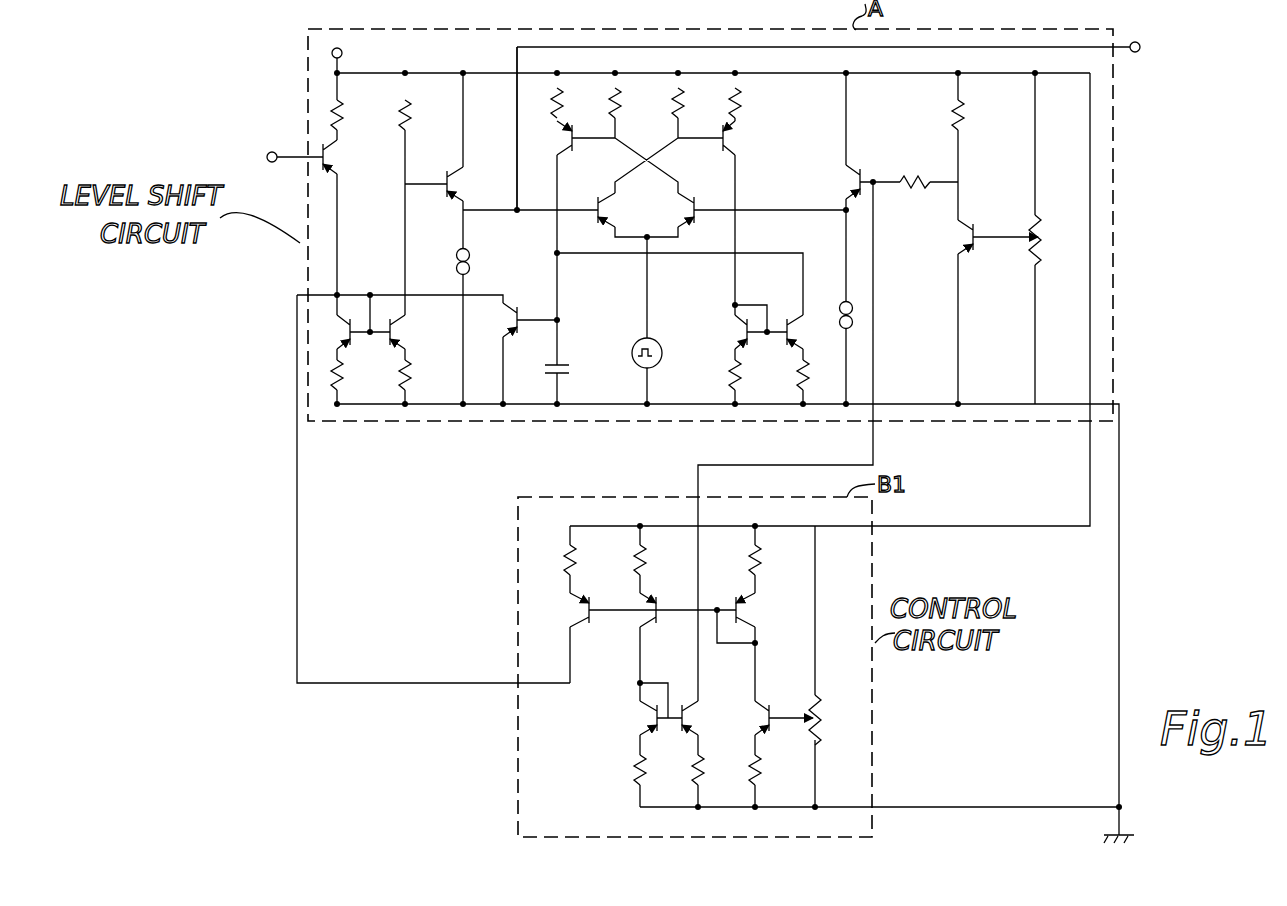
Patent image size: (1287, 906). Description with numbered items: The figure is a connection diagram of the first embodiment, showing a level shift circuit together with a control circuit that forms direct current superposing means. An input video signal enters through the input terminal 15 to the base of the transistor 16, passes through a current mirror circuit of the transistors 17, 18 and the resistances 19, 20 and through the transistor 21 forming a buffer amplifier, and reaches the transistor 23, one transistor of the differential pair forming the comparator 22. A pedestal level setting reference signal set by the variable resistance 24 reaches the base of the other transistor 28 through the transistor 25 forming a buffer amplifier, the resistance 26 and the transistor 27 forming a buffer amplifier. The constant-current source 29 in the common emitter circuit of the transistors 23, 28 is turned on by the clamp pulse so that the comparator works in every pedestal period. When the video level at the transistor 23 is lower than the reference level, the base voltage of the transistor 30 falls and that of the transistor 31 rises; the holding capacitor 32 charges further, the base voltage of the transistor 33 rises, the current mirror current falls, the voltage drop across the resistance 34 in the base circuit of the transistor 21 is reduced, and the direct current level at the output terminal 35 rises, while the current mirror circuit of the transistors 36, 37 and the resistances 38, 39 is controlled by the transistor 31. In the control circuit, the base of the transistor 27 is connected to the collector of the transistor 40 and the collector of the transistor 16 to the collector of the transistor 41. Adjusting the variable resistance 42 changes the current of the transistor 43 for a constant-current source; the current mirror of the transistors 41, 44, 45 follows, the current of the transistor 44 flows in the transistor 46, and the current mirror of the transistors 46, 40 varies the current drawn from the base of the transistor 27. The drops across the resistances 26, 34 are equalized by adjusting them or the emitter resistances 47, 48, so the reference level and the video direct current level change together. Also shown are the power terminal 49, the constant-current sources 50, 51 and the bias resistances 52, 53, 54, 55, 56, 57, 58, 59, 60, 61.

The input terminal 15 is at (265, 142).
The transistor 16 is at (346, 158).
The transistor 17 is at (326, 332).
The transistor 18 is at (412, 332).
The resistance 19 is at (354, 379).
The resistance 20 is at (421, 379).
The transistor 21 is at (470, 184).
The comparator 22 is at (631, 103).
The transistor 23 is at (621, 210).
The variable resistance 24 is at (1051, 234).
The transistor 25 is at (946, 238).
The resistance 26 is at (911, 168).
The transistor 27 is at (832, 182).
The transistor 28 is at (696, 201).
The constant-current source 29 is at (633, 344).
The transistor 30 is at (548, 138).
The transistor 31 is at (747, 138).
The holding capacitor 32 is at (574, 370).
The transistor 33 is at (493, 321).
The resistance 34 is at (422, 110).
The output terminal 35 is at (845, 33).
The transistor 36 is at (721, 332).
The transistor 37 is at (809, 332).
The resistance 38 is at (716, 379).
The resistance 39 is at (785, 379).
The transistor 40 is at (706, 718).
The transistor 41 is at (567, 610).
The variable resistance 42 is at (832, 717).
The transistor 43 is at (772, 706).
The transistor 44 is at (624, 619).
The transistor 45 is at (762, 610).
The transistor 46 is at (630, 718).
The resistance 47 is at (586, 560).
The resistance 48 is at (656, 560).
The power terminal 49 is at (354, 54).
The constant-current source 50 is at (480, 252).
The constant-current source 51 is at (830, 306).
The bias resistance 52 is at (354, 110).
The bias resistance 53 is at (533, 128).
The bias resistance 54 is at (571, 103).
The bias resistance 55 is at (694, 103).
The bias resistance 56 is at (751, 103).
The bias resistance 57 is at (975, 116).
The bias resistance 58 is at (771, 560).
The bias resistance 59 is at (771, 766).
The bias resistance 60 is at (713, 766).
The bias resistance 61 is at (655, 766).